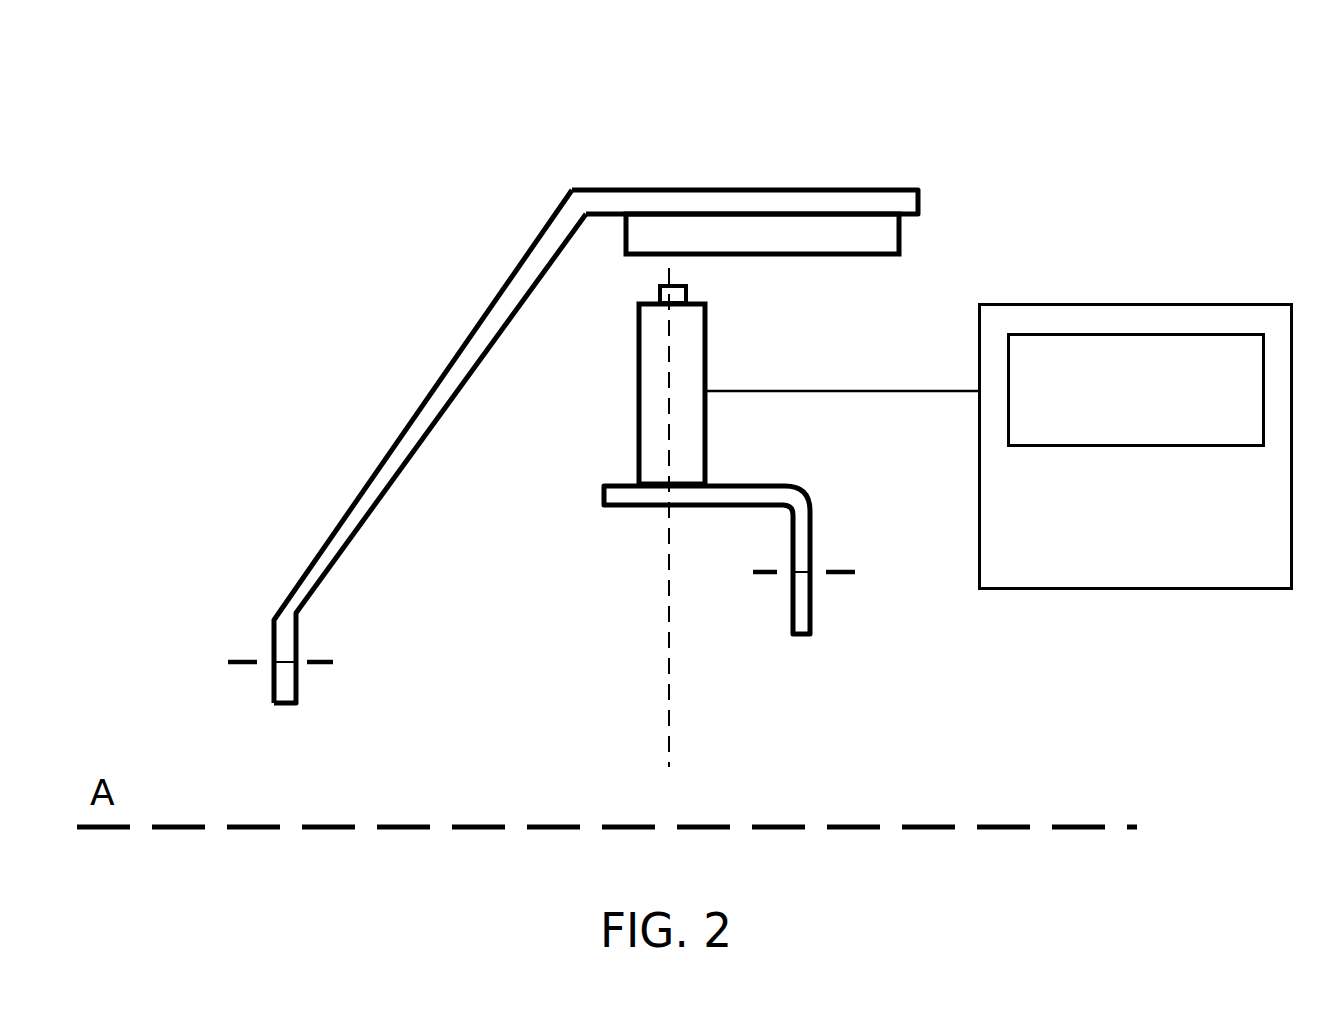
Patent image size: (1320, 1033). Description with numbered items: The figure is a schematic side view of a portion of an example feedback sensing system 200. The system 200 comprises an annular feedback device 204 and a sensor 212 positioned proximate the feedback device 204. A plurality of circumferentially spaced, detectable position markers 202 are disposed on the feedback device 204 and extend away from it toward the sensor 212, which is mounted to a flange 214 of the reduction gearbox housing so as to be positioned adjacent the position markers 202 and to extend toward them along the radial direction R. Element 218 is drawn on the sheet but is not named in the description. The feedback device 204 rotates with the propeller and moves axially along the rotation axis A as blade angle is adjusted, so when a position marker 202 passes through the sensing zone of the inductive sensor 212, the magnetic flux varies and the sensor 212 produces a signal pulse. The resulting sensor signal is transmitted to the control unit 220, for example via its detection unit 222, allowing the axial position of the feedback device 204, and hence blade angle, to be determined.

The feedback sensing system 200 is at (305, 155).
The position markers 202 is at (740, 230).
The feedback device 204 is at (297, 585).
The sensor 212 is at (637, 372).
The flange 214 is at (603, 493).
The top bar 218 is at (920, 220).
The control unit 220 is at (1165, 578).
The detection unit 222 is at (1165, 428).